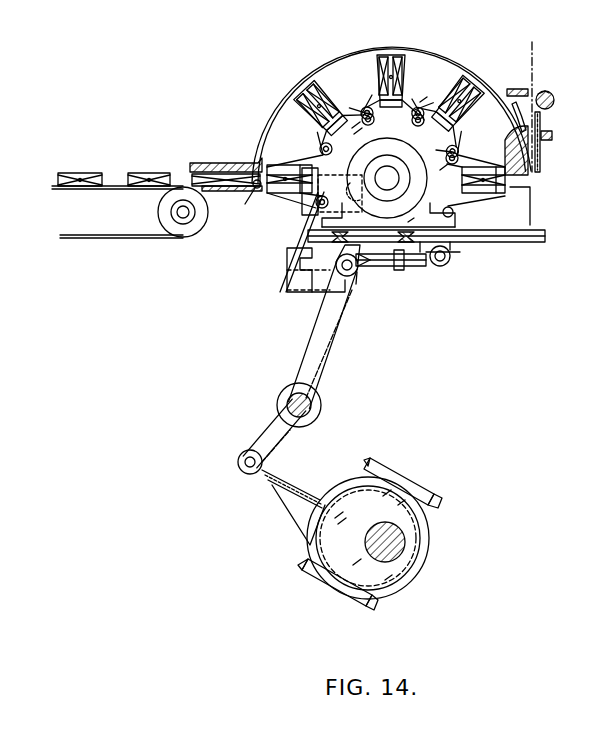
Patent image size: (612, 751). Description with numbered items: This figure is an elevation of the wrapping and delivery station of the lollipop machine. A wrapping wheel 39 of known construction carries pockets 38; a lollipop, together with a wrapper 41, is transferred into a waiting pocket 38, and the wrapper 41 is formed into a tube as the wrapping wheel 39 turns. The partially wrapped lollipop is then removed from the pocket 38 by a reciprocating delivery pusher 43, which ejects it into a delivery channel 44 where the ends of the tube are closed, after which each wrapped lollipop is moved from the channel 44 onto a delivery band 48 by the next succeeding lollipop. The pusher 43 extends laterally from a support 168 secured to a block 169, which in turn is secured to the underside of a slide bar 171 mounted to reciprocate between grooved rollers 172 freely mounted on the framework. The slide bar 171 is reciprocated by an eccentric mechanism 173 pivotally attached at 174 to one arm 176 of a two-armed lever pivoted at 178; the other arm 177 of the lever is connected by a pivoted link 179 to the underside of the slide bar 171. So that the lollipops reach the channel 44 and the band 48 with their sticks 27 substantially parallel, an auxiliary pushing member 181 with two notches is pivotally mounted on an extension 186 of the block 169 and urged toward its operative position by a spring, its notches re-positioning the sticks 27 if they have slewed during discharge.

The stick 27 is at (84, 172).
The delivery band 48 is at (112, 185).
The delivery channel 44 is at (258, 162).
The delivery pusher 43 is at (312, 162).
The pocket 38 is at (378, 66).
The wrapping wheel 39 is at (410, 108).
The wrapper 41 is at (533, 82).
The auxiliary pushing member 181 is at (300, 204).
The support 168 is at (302, 220).
The block 169 is at (300, 259).
The grooved rollers 172 is at (312, 268).
The slide bar 171 is at (528, 242).
The extension 186 is at (382, 264).
The pivoted link 179 is at (438, 266).
The arm 177 is at (330, 358).
The pivot 178 is at (286, 402).
The arm 176 is at (266, 440).
The pivotal attachment 174 is at (238, 463).
The eccentric mechanism 173 is at (332, 540).